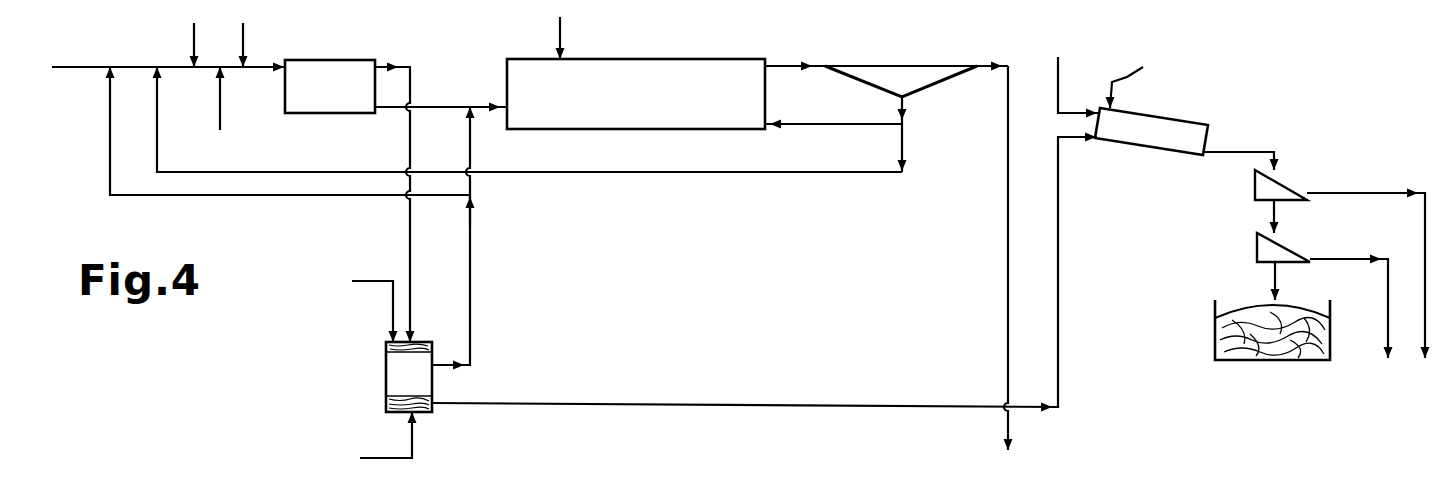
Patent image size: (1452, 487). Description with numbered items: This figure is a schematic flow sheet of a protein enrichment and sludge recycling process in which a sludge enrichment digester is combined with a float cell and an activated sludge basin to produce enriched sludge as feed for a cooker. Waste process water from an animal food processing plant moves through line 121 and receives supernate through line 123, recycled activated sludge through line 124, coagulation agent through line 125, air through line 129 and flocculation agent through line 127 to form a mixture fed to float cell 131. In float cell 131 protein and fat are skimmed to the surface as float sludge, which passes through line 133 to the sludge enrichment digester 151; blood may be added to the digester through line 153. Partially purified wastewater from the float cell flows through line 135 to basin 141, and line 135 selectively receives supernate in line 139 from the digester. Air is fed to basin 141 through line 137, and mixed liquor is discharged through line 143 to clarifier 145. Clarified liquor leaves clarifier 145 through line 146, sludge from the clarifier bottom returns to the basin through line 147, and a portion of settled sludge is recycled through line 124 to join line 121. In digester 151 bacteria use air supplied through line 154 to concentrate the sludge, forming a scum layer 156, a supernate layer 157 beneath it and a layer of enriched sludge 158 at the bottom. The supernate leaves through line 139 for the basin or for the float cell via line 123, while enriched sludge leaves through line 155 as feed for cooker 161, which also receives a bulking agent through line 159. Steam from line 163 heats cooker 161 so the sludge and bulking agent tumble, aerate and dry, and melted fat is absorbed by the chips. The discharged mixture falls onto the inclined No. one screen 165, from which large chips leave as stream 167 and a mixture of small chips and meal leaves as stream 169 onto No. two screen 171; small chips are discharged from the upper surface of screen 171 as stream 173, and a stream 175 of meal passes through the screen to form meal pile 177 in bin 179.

The line 121 is at (84, 66).
The line 123 is at (110, 122).
The line 124 is at (245, 171).
The line 125 is at (193, 37).
The line 127 is at (243, 30).
The line 129 is at (220, 108).
The float cell 131 is at (352, 58).
The line 133 is at (410, 76).
The line 135 is at (458, 108).
The line 137 is at (562, 30).
The line 139 is at (472, 142).
The basin 141 is at (668, 58).
The line 143 is at (792, 64).
The clarifier 145 is at (895, 64).
The line 146 is at (1008, 262).
The line 147 is at (905, 101).
The sludge enrichment digester 151 is at (363, 367).
The line 153 is at (393, 306).
The line 154 is at (412, 452).
The line 155 is at (827, 405).
The scum layer 156 is at (423, 343).
The supernate layer 157 is at (366, 381).
The layer of enriched sludge 158 is at (432, 412).
The line 159 is at (1060, 70).
The cooker 161 is at (1158, 116).
The line 163 is at (1234, 152).
The No. 1 screen 165 is at (1278, 183).
The stream 167 is at (1372, 190).
The stream 169 is at (1276, 212).
The No. 2 screen 171 is at (1282, 251).
The outlet line 173 is at (1366, 249).
The stream 175 is at (1275, 273).
The meal pile 177 is at (1300, 307).
The bin 179 is at (1235, 315).